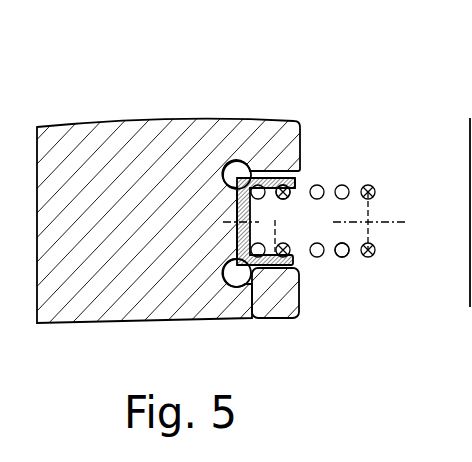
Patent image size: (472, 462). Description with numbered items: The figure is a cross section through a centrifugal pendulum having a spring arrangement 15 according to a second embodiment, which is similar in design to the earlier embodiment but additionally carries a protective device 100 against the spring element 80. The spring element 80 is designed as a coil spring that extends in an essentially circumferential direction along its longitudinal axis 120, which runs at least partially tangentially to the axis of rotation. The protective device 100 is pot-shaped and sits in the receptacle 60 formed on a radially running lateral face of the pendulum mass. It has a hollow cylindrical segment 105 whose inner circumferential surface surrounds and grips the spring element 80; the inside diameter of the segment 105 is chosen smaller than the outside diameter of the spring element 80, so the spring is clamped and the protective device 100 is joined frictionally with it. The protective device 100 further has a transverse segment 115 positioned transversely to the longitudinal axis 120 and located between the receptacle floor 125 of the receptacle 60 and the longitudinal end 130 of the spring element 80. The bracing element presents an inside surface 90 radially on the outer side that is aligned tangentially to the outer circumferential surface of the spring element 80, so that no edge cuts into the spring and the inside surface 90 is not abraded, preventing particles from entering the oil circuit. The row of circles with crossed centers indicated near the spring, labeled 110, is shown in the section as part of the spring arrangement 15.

The spring arrangement 15 is at (312, 146).
The receptacle 60 is at (285, 199).
The spring element 80 is at (347, 255).
The inside surface 90 is at (295, 177).
The protective device 100 is at (268, 262).
The hollow cylindrical segment 105 is at (274, 179).
The rolling element row 110 is at (261, 198).
The transverse segment 115 is at (236, 177).
The longitudinal axis 120 is at (393, 220).
The receptacle floor 125 is at (237, 274).
The longitudinal end 130 is at (346, 187).